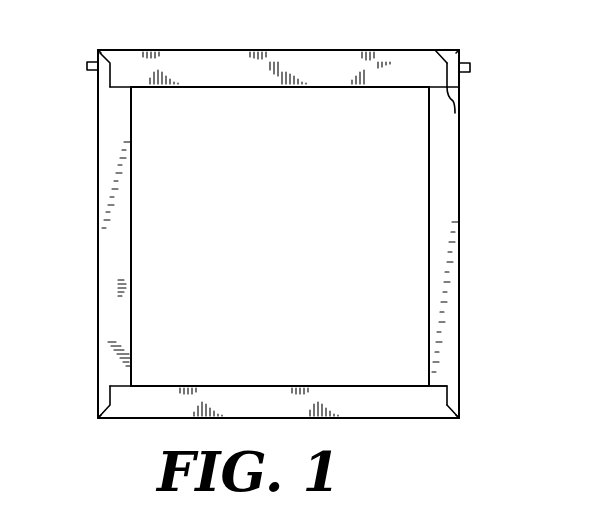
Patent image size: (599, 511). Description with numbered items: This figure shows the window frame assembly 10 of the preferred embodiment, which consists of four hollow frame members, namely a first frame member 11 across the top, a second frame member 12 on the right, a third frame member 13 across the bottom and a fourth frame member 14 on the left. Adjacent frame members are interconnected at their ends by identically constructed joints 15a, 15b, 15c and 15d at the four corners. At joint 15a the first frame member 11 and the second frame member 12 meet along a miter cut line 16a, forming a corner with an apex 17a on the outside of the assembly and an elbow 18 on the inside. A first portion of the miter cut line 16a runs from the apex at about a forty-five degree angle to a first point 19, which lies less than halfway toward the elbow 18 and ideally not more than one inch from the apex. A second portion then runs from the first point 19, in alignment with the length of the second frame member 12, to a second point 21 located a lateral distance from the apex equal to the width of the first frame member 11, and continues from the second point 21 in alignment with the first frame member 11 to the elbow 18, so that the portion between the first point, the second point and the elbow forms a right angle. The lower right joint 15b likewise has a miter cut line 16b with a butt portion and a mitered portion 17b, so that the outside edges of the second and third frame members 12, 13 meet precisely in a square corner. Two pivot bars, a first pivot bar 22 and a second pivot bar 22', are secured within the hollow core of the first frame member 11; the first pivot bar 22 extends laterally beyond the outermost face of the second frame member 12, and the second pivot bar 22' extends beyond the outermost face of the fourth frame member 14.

The frame assembly 10 is at (282, 13).
The first frame member 11 is at (227, 50).
The second frame member 12 is at (459, 243).
The third frame member 13 is at (273, 419).
The fourth frame member 14 is at (97, 229).
The joint 15a is at (458, 49).
The joint 15b is at (459, 419).
The joint 15c is at (98, 418).
The joint 15d is at (97, 50).
The miter cut line 16a is at (447, 87).
The lower joint line 16b is at (448, 393).
The upper mitered edge 17a is at (460, 52).
The apex 17b is at (459, 416).
The elbow 18 is at (426, 88).
The first point 19 is at (435, 50).
The second point 21 is at (455, 113).
The first pivot bar 22 is at (481, 66).
The second pivot bar 22' is at (65, 73).